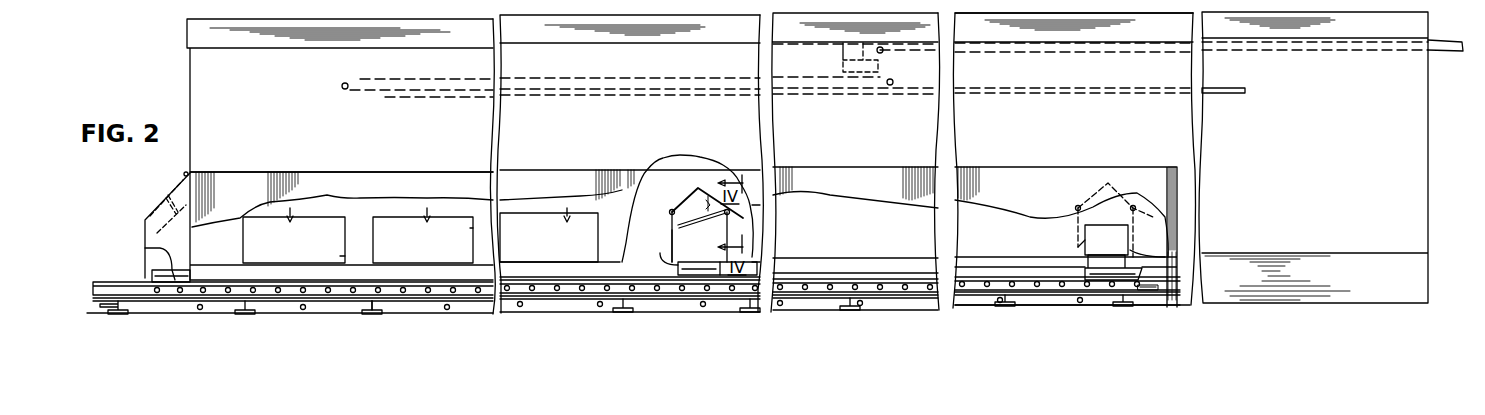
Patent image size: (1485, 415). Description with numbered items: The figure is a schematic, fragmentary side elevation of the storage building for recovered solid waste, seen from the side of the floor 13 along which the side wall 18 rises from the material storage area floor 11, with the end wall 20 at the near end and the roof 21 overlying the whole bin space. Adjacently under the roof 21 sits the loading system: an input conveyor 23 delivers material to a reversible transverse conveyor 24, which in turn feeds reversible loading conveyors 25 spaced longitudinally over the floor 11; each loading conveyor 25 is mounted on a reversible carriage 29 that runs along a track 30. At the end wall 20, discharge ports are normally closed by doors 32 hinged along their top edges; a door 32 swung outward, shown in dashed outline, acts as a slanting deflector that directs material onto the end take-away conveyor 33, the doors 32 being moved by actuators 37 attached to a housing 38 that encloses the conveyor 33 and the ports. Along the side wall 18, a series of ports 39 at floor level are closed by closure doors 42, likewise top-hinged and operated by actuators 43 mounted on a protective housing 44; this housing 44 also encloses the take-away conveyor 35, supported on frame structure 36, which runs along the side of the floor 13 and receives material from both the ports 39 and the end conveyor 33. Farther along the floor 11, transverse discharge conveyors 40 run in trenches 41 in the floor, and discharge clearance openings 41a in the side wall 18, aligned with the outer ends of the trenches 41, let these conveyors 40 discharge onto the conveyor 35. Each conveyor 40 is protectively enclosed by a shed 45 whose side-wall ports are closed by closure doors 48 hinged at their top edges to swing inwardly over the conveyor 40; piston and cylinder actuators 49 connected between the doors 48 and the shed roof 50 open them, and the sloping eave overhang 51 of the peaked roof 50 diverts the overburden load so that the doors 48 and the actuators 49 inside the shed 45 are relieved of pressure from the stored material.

The material storage area floor 11 is at (858, 262).
The side of the floor 13 is at (920, 262).
The side wall 18 is at (1050, 148).
The end wall 20 is at (190, 90).
The roof 21 is at (926, 27).
The input conveyor 23 is at (1253, 46).
The transverse conveyor 24 is at (867, 43).
The loading conveyor 25 is at (347, 78).
The carriage 29 is at (405, 98).
The track 30 is at (396, 100).
The door 32 is at (153, 200).
The take-away conveyor 33 is at (145, 248).
The take-away conveyor 35 is at (948, 265).
The frame structure 36 is at (372, 290).
The actuator 37 is at (184, 174).
The housing 38 is at (145, 227).
The port 39 is at (340, 256).
The discharge conveyor 40 is at (1118, 255).
The trench 41 is at (1150, 257).
The discharge clearance opening 41a is at (1083, 237).
The closure door 42 is at (556, 249).
The actuator 43 is at (568, 208).
The protective housing 44 is at (326, 172).
The shed 45 is at (670, 233).
The closure door 48 is at (708, 207).
The actuator 49 is at (710, 177).
The roof 50 is at (672, 210).
The eave overhang 51 is at (742, 214).